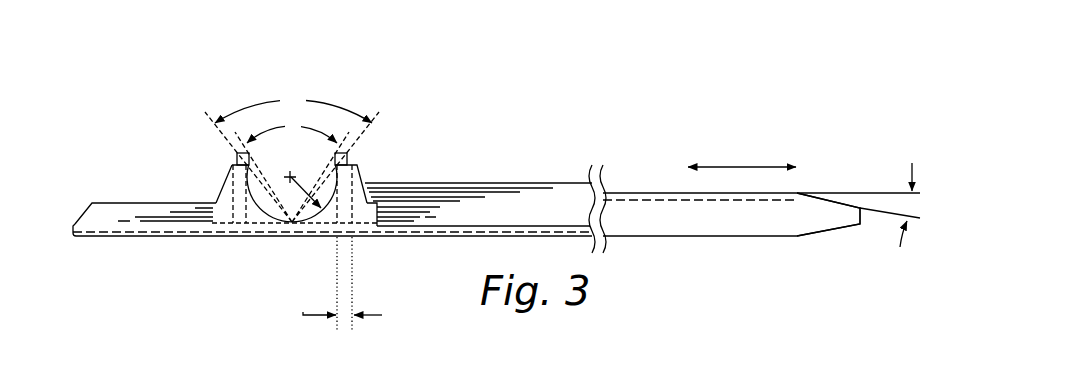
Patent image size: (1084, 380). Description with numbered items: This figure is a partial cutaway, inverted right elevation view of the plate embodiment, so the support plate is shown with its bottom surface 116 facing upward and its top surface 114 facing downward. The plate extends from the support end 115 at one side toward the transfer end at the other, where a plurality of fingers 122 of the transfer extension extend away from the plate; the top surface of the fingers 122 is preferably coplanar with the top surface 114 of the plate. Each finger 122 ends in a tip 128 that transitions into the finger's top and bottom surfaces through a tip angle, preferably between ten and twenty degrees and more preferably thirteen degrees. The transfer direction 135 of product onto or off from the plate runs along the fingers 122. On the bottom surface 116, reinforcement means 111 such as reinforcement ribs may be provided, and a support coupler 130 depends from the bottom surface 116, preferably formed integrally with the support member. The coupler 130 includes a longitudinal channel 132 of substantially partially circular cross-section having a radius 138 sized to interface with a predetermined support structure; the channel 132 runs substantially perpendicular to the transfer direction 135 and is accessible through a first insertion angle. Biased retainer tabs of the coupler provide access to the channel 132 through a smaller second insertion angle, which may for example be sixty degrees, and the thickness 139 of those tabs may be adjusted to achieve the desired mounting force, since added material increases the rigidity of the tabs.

The reinforcement means 111 is at (460, 208).
The top surface 114 is at (455, 232).
The support end 115 is at (76, 200).
The bottom surface 116 is at (500, 222).
The finger 122 is at (795, 215).
The tip 128 is at (862, 219).
The support coupler 130 is at (240, 96).
The longitudinal channel 132 is at (258, 212).
The transfer direction 135 is at (742, 153).
The radius 138 is at (291, 186).
The thickness 139 is at (332, 294).